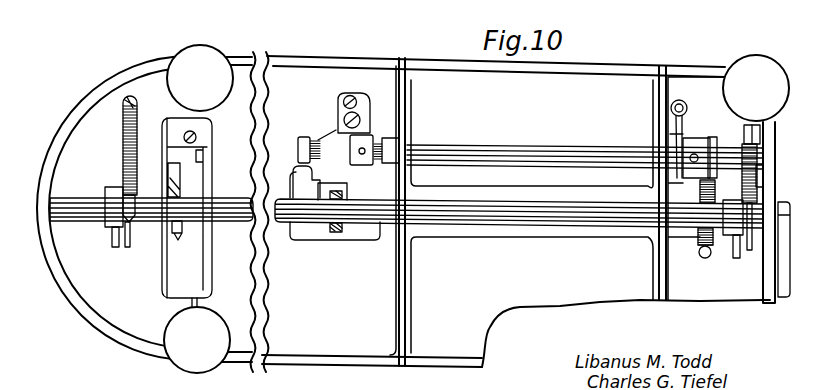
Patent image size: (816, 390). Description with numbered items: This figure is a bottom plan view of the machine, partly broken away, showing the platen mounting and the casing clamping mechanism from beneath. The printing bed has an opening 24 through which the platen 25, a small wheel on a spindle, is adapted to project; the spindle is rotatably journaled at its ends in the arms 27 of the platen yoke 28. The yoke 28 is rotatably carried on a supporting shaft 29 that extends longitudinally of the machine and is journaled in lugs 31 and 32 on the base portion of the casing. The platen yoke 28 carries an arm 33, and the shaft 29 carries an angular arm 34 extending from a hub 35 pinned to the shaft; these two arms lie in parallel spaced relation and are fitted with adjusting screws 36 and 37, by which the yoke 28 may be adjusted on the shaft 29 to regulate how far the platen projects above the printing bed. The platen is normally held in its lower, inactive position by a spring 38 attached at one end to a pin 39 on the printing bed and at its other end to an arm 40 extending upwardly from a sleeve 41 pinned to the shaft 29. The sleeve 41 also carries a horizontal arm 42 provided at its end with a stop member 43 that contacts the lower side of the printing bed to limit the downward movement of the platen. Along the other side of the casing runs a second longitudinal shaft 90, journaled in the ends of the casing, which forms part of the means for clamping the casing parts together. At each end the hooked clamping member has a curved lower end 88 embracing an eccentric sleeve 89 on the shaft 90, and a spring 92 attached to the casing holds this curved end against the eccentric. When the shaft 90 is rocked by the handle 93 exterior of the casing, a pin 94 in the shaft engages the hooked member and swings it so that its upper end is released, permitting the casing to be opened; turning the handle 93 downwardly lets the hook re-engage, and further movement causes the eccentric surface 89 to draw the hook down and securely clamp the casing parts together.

The opening 24 is at (305, 232).
The platen 25 is at (336, 233).
The arms 27 is at (300, 194).
The platen yoke 28 is at (332, 181).
The supporting shaft 29 is at (600, 140).
The lug 31 is at (303, 137).
The lug 32 is at (390, 137).
The arm 33 is at (368, 106).
The angular arm 34 is at (328, 128).
The hub 35 is at (362, 165).
The adjusting screw 36 is at (344, 118).
The adjusting screw 37 is at (347, 97).
The spring 38 is at (700, 190).
The pin 39 is at (699, 253).
The arm 40 is at (713, 137).
The sleeve 41 is at (699, 138).
The horizontal arm 42 is at (670, 134).
The stop member 43 is at (671, 107).
The curved lower end 88 is at (128, 247).
The eccentric sleeve 89 is at (114, 190).
The shaft 90 is at (609, 230).
The spring 92 is at (123, 137).
The handle 93 is at (782, 266).
The pin 94 is at (115, 247).